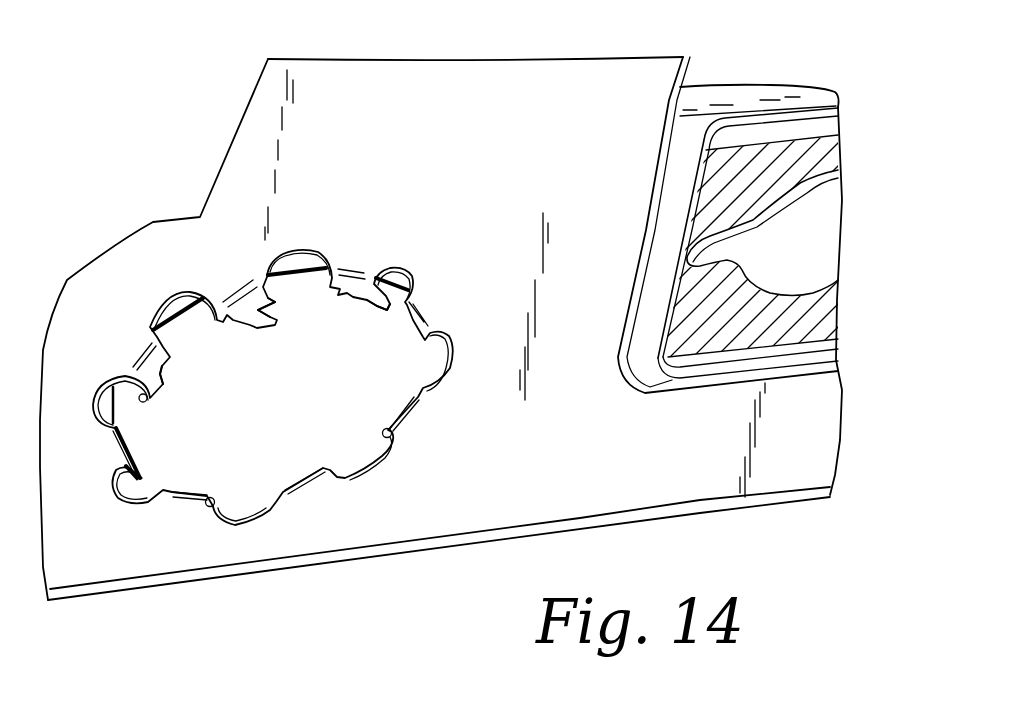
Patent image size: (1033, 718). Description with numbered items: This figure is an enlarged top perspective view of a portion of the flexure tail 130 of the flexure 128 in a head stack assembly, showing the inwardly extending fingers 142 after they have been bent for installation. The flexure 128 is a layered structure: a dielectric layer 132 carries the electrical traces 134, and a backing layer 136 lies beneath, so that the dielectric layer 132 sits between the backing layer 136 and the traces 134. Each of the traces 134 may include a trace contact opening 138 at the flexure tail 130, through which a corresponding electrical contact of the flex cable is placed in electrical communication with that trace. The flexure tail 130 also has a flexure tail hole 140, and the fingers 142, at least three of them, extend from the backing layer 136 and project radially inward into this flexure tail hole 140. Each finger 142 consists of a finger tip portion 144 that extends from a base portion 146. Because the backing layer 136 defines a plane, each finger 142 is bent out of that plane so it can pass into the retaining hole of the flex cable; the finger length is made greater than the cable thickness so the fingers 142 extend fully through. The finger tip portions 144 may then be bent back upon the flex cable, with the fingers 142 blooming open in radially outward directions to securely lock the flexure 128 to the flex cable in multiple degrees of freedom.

The flexure 128 is at (160, 97).
The flexure tail 130 is at (222, 76).
The dielectric layer 132 is at (714, 95).
The electrical traces 134 is at (835, 158).
The backing layer 136 is at (601, 119).
The trace contact opening 138 is at (832, 230).
The flexure tail hole 140 is at (157, 320).
The fingers 142 is at (226, 323).
The finger tip portion 144 is at (275, 329).
The base portion 146 is at (226, 291).